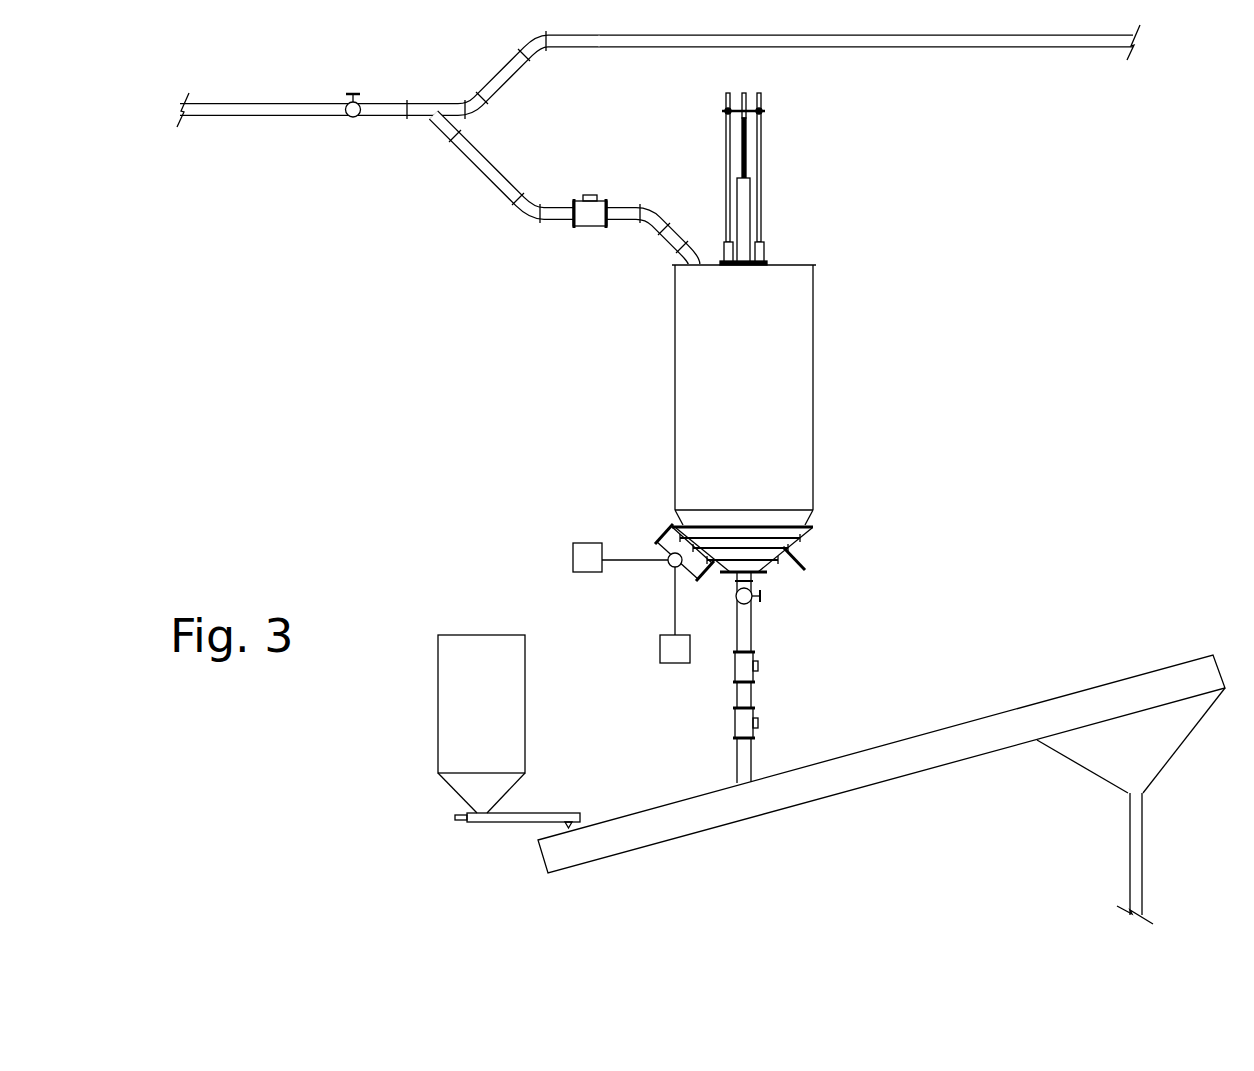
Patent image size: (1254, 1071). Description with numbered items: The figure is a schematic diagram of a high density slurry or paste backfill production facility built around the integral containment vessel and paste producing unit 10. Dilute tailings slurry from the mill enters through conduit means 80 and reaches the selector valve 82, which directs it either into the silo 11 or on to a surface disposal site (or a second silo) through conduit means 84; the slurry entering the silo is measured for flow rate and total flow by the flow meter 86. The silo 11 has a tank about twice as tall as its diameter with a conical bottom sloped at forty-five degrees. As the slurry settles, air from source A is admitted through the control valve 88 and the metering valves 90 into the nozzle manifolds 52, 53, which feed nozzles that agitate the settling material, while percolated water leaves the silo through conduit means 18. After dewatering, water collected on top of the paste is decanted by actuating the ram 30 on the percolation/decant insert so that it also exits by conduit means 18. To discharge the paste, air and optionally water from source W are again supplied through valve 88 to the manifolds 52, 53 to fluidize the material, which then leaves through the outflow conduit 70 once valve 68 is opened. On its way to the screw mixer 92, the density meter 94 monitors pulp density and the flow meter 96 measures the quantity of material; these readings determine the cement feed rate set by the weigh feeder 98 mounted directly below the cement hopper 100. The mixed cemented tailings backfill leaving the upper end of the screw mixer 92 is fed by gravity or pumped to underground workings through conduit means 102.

The integral containment vessel and high density slurry or paste producing unit 10 is at (630, 375).
The silo 11 is at (802, 370).
The conduit means 18 is at (803, 555).
The ram 30 is at (745, 197).
The nozzle manifold 52 is at (675, 528).
The nozzle manifold 53 is at (723, 570).
The valve 68 is at (762, 597).
The outflow conduit 70 is at (752, 628).
The conduit means 80 is at (248, 112).
The selector valve 82 is at (353, 118).
The conduit means 84 is at (950, 47).
The flow meter 86 is at (590, 218).
The control valve 88 is at (672, 564).
The metering valves 90 is at (665, 537).
The screw mixer 92 is at (862, 782).
The density meter 94 is at (752, 672).
The flow meter 96 is at (758, 721).
The weigh feeder 98 is at (540, 815).
The cement hopper 100 is at (450, 705).
The conduit means 102 is at (1137, 852).